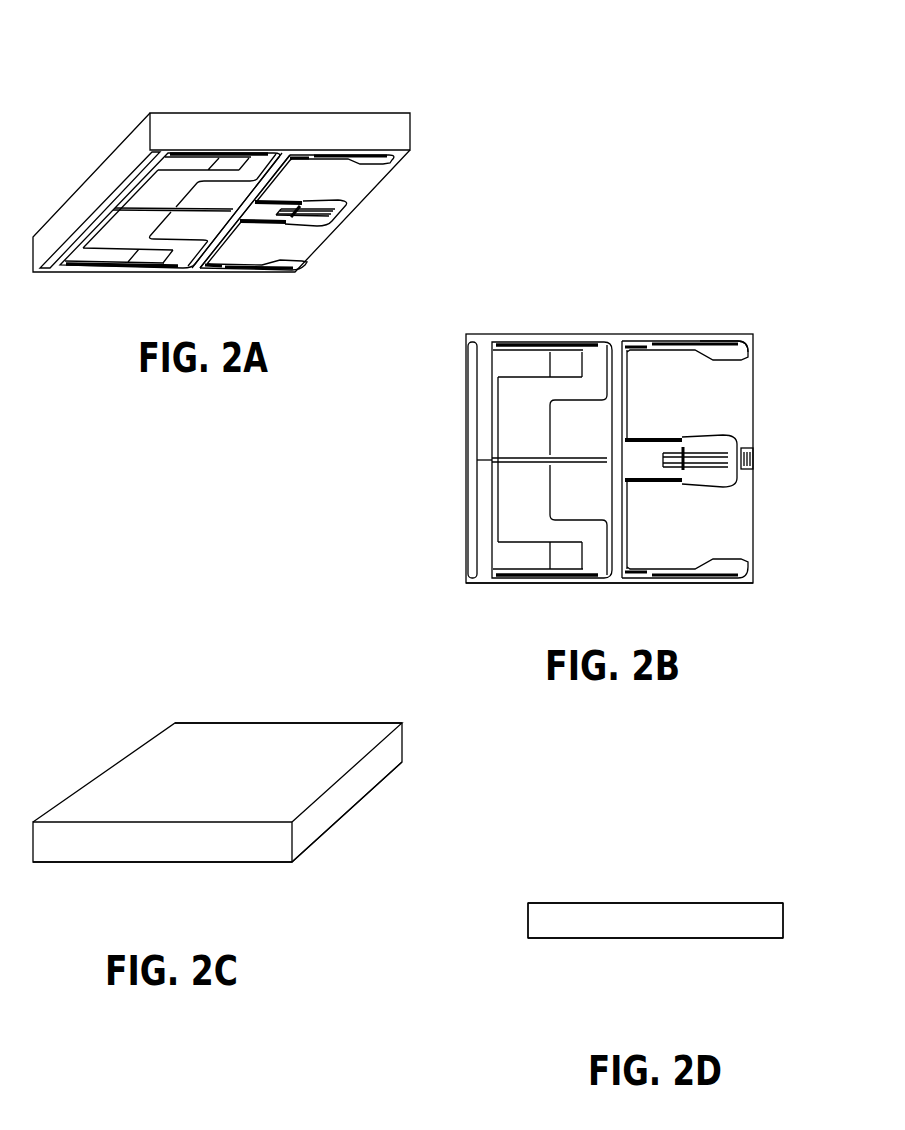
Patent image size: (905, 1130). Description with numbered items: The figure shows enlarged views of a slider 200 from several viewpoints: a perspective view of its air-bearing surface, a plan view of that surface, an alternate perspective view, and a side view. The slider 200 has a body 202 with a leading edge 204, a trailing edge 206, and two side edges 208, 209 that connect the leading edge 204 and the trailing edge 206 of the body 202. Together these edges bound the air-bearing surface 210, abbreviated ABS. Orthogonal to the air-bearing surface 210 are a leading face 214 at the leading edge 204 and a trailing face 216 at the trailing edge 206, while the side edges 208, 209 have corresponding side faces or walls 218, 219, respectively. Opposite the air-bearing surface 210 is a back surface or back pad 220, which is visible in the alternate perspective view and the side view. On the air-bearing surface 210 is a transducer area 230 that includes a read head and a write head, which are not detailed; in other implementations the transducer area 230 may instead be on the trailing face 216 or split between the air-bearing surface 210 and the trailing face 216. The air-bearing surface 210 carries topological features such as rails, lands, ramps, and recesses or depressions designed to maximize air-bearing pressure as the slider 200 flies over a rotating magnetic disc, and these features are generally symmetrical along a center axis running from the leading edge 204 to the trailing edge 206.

In FIG. 2A, the slider 200 is at (155, 60).
In FIG. 2B, the slider 200 is at (652, 257).
In FIG. 2C, the slider 200 is at (178, 672).
In FIG. 2D, the slider 200 is at (683, 872).
In FIG. 2A, the body 202 is at (333, 112).
In FIG. 2A, the leading edge 204 is at (67, 233).
In FIG. 2B, the leading edge 204 is at (462, 405).
In FIG. 2D, the leading edge 204 is at (530, 942).
In FIG. 2A, the trailing edge 206 is at (317, 248).
In FIG. 2B, the trailing edge 206 is at (758, 440).
In FIG. 2C, the trailing edge 206 is at (383, 780).
In FIG. 2D, the trailing edge 206 is at (778, 942).
In FIG. 2A, the side edge 208 is at (222, 273).
In FIG. 2B, the side edge 208 is at (692, 585).
In FIG. 2C, the side edge 208 is at (275, 722).
In FIG. 2A, the side edge 209 is at (170, 152).
In FIG. 2B, the side edge 209 is at (540, 334).
In FIG. 2C, the side edge 209 is at (130, 862).
In FIG. 2A, the air-bearing surface 210 is at (227, 208).
In FIG. 2B, the air-bearing surface 210 is at (713, 330).
In FIG. 2D, the air-bearing surface 210 is at (623, 942).
In FIG. 2A, the leading face 214 is at (113, 170).
In FIG. 2B, the leading face 214 is at (462, 530).
In FIG. 2D, the leading face 214 is at (528, 920).
In FIG. 2B, the trailing face 216 is at (758, 386).
In FIG. 2C, the trailing face 216 is at (345, 792).
In FIG. 2D, the trailing face 216 is at (785, 918).
In FIG. 2B, the side face 218 is at (550, 585).
In FIG. 2B, the side face 219 is at (685, 334).
In FIG. 2C, the side face 219 is at (177, 855).
In FIG. 2D, the side face 219 is at (674, 928).
In FIG. 2C, the back surface 220 is at (142, 747).
In FIG. 2D, the back surface 220 is at (617, 900).
In FIG. 2B, the transducer area 230 is at (752, 480).